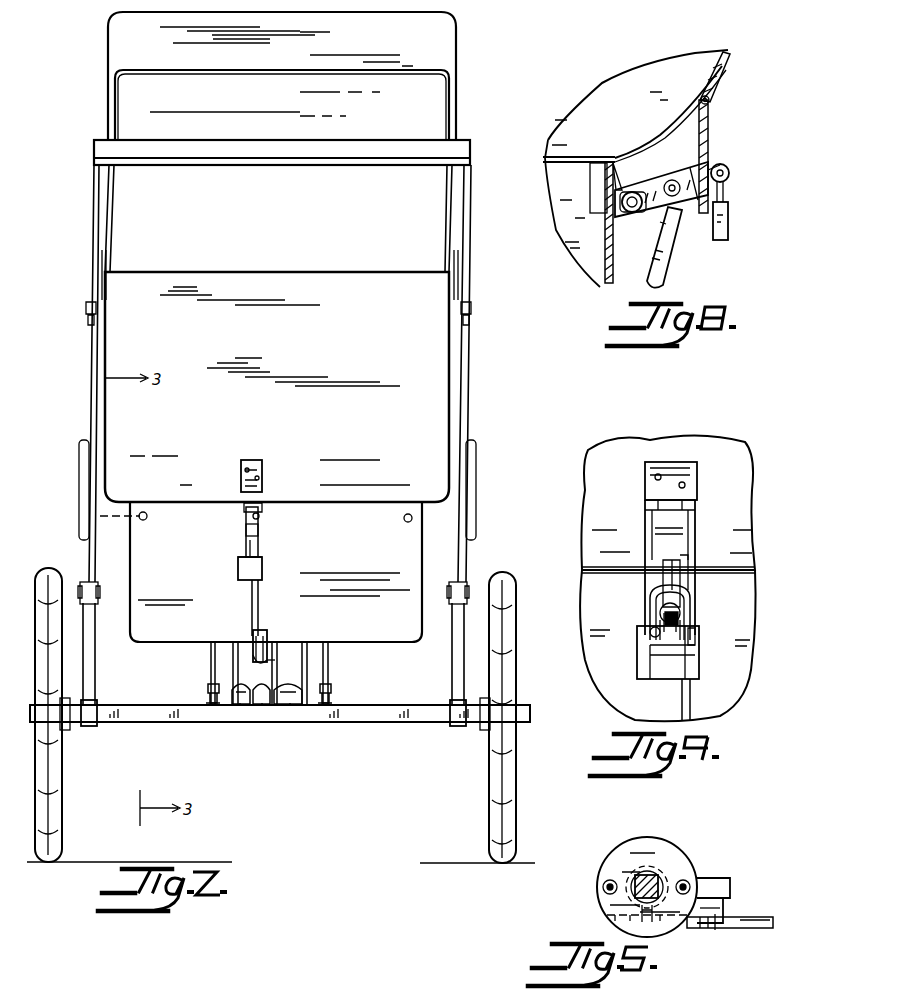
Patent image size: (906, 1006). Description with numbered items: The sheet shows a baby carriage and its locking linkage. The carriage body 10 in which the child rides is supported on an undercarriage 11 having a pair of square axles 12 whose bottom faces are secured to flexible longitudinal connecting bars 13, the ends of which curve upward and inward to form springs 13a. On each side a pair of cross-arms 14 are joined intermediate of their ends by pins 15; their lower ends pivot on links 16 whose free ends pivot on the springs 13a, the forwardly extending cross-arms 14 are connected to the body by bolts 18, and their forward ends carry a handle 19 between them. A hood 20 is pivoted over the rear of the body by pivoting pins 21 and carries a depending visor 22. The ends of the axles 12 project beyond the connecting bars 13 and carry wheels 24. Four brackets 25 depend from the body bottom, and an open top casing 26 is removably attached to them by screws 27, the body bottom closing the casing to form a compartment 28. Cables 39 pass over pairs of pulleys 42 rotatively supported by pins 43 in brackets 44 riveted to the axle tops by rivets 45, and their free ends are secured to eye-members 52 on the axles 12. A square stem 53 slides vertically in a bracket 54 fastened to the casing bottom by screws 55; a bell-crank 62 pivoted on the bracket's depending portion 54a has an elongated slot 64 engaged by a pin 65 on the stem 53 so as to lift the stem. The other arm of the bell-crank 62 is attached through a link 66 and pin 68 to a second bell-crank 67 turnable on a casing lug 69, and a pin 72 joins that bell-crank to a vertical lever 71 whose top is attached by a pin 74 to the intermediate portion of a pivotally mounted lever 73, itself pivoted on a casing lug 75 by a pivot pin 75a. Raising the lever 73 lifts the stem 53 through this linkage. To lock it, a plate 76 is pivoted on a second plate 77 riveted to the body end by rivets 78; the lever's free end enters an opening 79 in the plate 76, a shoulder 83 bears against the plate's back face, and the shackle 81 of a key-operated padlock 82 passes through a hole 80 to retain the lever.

In FIG. 2, the carriage body 10 is at (443, 365).
In FIG. 8, the carriage body 10 is at (607, 98).
In FIG. 9, the carriage body 10 is at (735, 472).
In FIG. 2, the undercarriage 11 is at (176, 732).
In FIG. 2, the square axles 12 is at (392, 720).
In FIG. 2, the connecting bars 13 is at (90, 726).
In FIG. 2, the springs 13a is at (92, 684).
In FIG. 2, the cross-arms 14 is at (90, 340).
In FIG. 2, the pins 15 is at (80, 486).
In FIG. 2, the links 16 is at (96, 600).
In FIG. 2, the bolts 18 is at (90, 306).
In FIG. 2, the handle 19 is at (362, 158).
In FIG. 2, the hood 20 is at (440, 118).
In FIG. 2, the pivoting pins 21 is at (102, 275).
In FIG. 2, the visor 22 is at (435, 58).
In FIG. 2, the wheels 24 is at (50, 796).
In FIG. 8, the brackets 25 is at (598, 170).
In FIG. 2, the casing 26 is at (420, 570).
In FIG. 8, the casing 26 is at (604, 264).
In FIG. 9, the casing 26 is at (735, 690).
In FIG. 2, the screws 27 is at (145, 512).
In FIG. 8, the screws 27 is at (623, 172).
In FIG. 8, the compartment 28 is at (580, 250).
In FIG. 2, the cables 39 is at (211, 662).
In FIG. 2, the pulleys 42 is at (244, 684).
In FIG. 2, the pins 43 is at (264, 708).
In FIG. 2, the brackets 44 is at (242, 708).
In FIG. 2, the rivets 45 is at (218, 706).
In FIG. 2, the eye-members 52 is at (206, 700).
In FIG. 5, the stem 53 is at (652, 872).
In FIG. 5, the bracket 54 is at (620, 850).
In FIG. 5, the depending portion 54a is at (720, 888).
In FIG. 5, the screws 55 is at (603, 887).
In FIG. 5, the bell-crank 62 is at (696, 928).
In FIG. 5, the elongated slot 64 is at (618, 922).
In FIG. 5, the pin 65 is at (647, 930).
In FIG. 2, the link 66 is at (233, 662).
In FIG. 2, the bell-crank 67 is at (267, 640).
In FIG. 2, the pin 68 is at (276, 662).
In FIG. 2, the lug 69 is at (267, 650).
In FIG. 2, the lever 71 is at (259, 592).
In FIG. 8, the lever 71 is at (664, 276).
In FIG. 9, the lever 71 is at (681, 696).
In FIG. 2, the pin 72 is at (253, 640).
In FIG. 2, the lever 73 is at (245, 520).
In FIG. 8, the lever 73 is at (648, 215).
In FIG. 9, the lever 73 is at (692, 595).
In FIG. 2, the pin 74 is at (243, 464).
In FIG. 8, the pin 74 is at (676, 200).
In FIG. 9, the pin 74 is at (652, 607).
In FIG. 2, the lug 75 is at (260, 505).
In FIG. 8, the lug 75 is at (620, 222).
In FIG. 9, the lug 75 is at (704, 642).
In FIG. 2, the pivot pin 75a is at (262, 520).
In FIG. 8, the pivot pin 75a is at (636, 196).
In FIG. 9, the pivot pin 75a is at (650, 631).
In FIG. 2, the plate 76 is at (241, 488).
In FIG. 8, the plate 76 is at (710, 116).
In FIG. 9, the plate 76 is at (685, 536).
In FIG. 8, the second plate 77 is at (703, 78).
In FIG. 9, the second plate 77 is at (670, 470).
In FIG. 2, the rivets 78 is at (258, 470).
In FIG. 8, the rivets 78 is at (715, 94).
In FIG. 9, the rivets 78 is at (679, 486).
In FIG. 8, the opening 79 is at (709, 172).
In FIG. 9, the opening 79 is at (690, 572).
In FIG. 8, the hole 80 is at (729, 172).
In FIG. 9, the hole 80 is at (682, 615).
In FIG. 2, the shackle 81 is at (240, 560).
In FIG. 8, the shackle 81 is at (725, 190).
In FIG. 9, the shackle 81 is at (665, 613).
In FIG. 2, the padlock 82 is at (240, 578).
In FIG. 8, the padlock 82 is at (729, 224).
In FIG. 9, the padlock 82 is at (637, 663).
In FIG. 2, the shoulder 83 is at (246, 546).
In FIG. 8, the shoulder 83 is at (695, 185).
In FIG. 9, the shoulder 83 is at (658, 585).